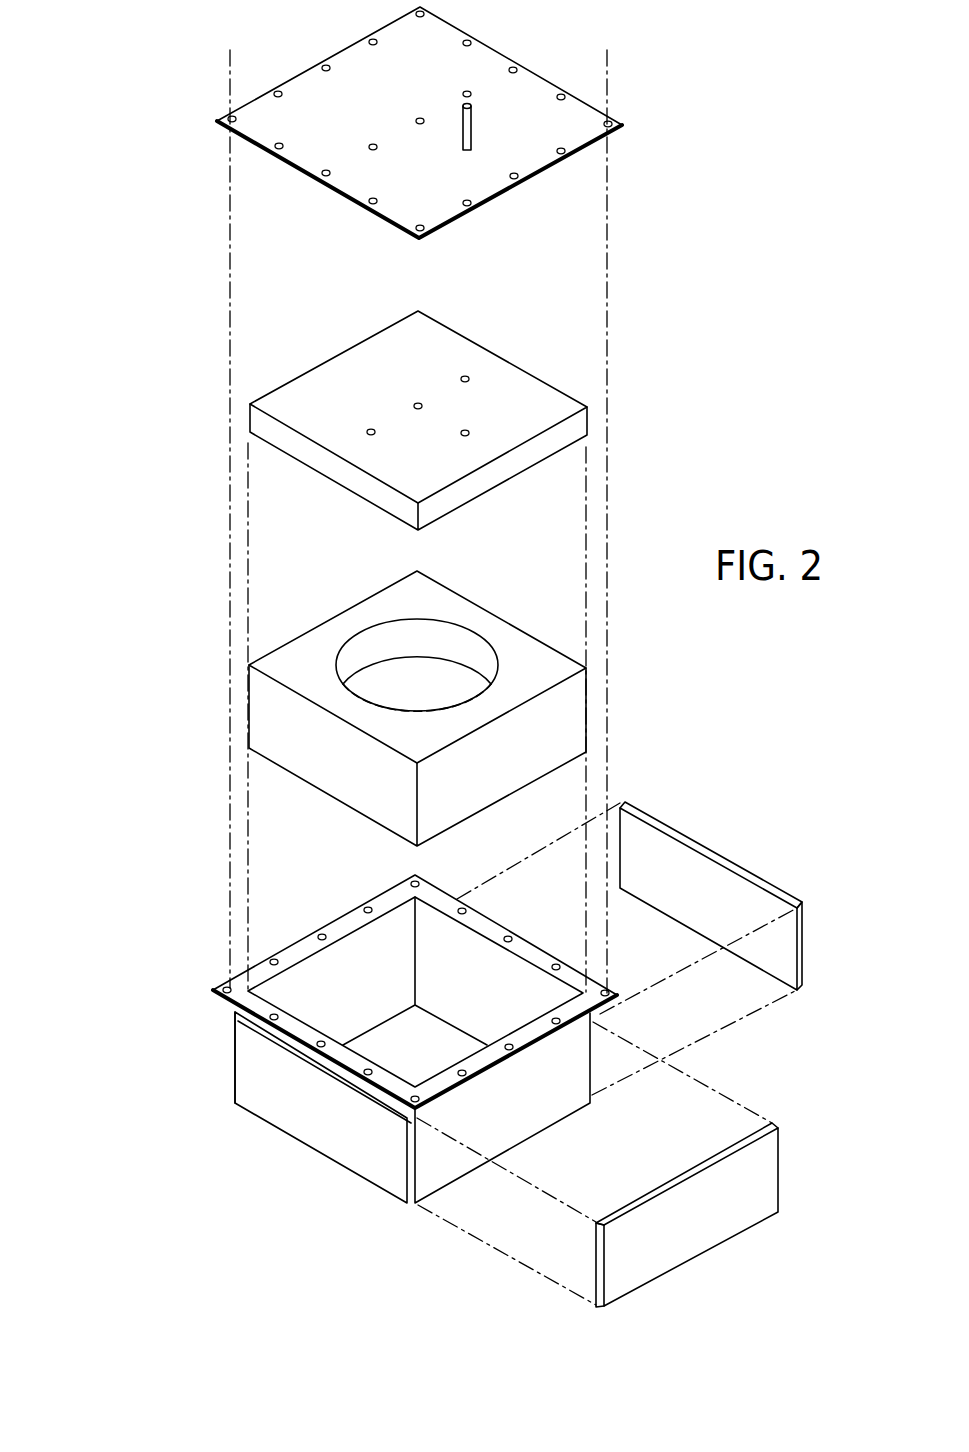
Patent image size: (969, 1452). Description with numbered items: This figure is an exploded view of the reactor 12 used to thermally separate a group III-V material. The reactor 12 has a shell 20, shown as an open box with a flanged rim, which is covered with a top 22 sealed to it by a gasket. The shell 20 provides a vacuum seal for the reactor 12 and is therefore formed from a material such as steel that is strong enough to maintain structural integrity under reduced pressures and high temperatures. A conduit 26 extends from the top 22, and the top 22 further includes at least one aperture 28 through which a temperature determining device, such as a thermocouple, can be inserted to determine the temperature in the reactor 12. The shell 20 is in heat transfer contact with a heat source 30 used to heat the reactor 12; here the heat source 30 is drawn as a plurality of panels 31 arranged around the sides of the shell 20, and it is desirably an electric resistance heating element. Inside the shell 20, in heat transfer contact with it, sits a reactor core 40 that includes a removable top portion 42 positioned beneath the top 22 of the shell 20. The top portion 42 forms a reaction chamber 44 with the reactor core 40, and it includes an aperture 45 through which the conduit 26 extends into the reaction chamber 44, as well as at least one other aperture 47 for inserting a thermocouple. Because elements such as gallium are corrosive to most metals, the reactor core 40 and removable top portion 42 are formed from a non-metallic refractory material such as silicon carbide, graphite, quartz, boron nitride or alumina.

The reactor 12 is at (137, 542).
The shell 20 is at (542, 1113).
The top 22 is at (490, 60).
The conduit 26 is at (472, 124).
The aperture 28 is at (373, 143).
The heat source 30 is at (713, 850).
The panels 31 is at (802, 937).
The reactor core 40 is at (562, 717).
The removable top portion 42 is at (525, 390).
The reaction chamber 44 is at (455, 655).
The aperture 45 is at (469, 435).
The aperture 47 is at (466, 376).